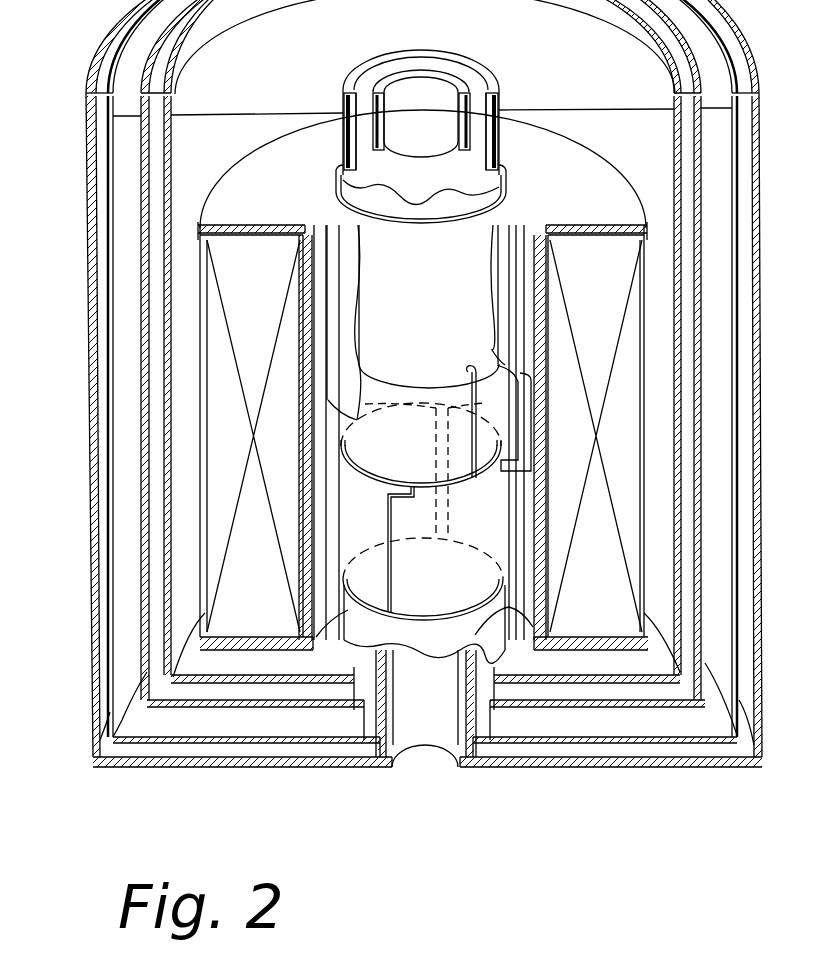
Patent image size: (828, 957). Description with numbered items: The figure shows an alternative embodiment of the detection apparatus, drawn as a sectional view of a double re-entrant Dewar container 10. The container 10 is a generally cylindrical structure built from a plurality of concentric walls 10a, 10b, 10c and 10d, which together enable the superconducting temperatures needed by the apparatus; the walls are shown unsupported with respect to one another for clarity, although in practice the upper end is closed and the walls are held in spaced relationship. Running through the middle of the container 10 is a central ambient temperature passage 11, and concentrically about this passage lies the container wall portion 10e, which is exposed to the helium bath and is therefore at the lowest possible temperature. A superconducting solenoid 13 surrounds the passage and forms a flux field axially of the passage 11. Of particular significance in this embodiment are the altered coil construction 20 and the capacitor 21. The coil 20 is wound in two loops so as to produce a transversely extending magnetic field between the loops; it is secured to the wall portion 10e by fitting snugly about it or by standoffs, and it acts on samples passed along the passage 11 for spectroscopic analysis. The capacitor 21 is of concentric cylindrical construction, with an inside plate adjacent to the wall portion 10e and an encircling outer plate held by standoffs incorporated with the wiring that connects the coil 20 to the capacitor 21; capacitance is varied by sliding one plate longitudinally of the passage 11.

The double reentrant Dewar container 10 is at (392, 414).
The concentric wall 10a is at (96, 491).
The concentric wall 10b is at (112, 450).
The concentric wall 10c is at (143, 402).
The concentric wall 10d is at (165, 352).
The container wall portion 10e is at (440, 655).
The central ambient temperature passage 11 is at (428, 765).
The superconducting solenoid 13 is at (258, 586).
The coil 20 is at (438, 620).
The capacitor 21 is at (431, 322).